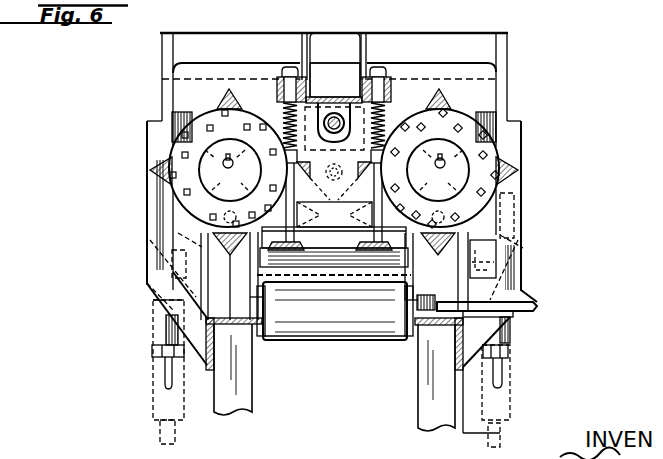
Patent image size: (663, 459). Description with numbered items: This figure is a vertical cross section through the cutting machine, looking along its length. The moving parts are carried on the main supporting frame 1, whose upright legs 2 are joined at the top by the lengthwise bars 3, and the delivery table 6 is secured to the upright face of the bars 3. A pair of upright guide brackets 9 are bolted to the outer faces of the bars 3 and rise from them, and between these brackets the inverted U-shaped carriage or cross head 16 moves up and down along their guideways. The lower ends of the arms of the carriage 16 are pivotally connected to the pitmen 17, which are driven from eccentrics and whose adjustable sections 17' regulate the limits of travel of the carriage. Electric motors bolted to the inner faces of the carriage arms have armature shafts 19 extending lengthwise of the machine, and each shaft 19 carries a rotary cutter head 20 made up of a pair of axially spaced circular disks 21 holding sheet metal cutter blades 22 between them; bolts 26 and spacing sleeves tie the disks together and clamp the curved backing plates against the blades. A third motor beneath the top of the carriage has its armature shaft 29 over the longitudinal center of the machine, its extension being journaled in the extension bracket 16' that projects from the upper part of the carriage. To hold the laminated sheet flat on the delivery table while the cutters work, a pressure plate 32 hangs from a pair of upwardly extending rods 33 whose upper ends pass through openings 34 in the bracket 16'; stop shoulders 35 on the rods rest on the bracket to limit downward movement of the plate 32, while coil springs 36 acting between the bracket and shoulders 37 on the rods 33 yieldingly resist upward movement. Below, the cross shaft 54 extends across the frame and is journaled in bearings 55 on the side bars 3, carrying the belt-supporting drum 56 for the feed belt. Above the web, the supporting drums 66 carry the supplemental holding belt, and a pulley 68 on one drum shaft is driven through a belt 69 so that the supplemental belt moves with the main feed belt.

The main supporting frame 1 is at (155, 349).
The upright legs 2 is at (200, 408).
The lengthwise bars 3 is at (209, 330).
The delivery table 6 is at (331, 277).
The upright guide brackets 9 is at (152, 254).
The carriage or cross head 16 is at (334, 64).
The extension bracket 16' is at (335, 80).
The pitmen 17 is at (327, 373).
The adjustable sections 17' is at (330, 322).
The armature shafts 19 is at (334, 168).
The rotary cutter heads 20 is at (160, 168).
The circular disks 21 is at (170, 184).
The cutter blades 22 is at (224, 104).
The bolts 26 is at (170, 200).
The armature shaft 29 is at (330, 112).
The pressure plate 32 is at (334, 238).
The rods 33 is at (334, 214).
The openings 34 is at (278, 90).
The stop shoulders 35 is at (289, 67).
The coil springs 36 is at (284, 104).
The shoulders 37 is at (334, 172).
The cross shaft 54 is at (535, 311).
The bearings 55 is at (318, 276).
The belt-supporting drum 56 is at (350, 322).
The supporting drums 66 is at (357, 278).
The pulley 68 is at (490, 242).
The belt 69 is at (476, 270).